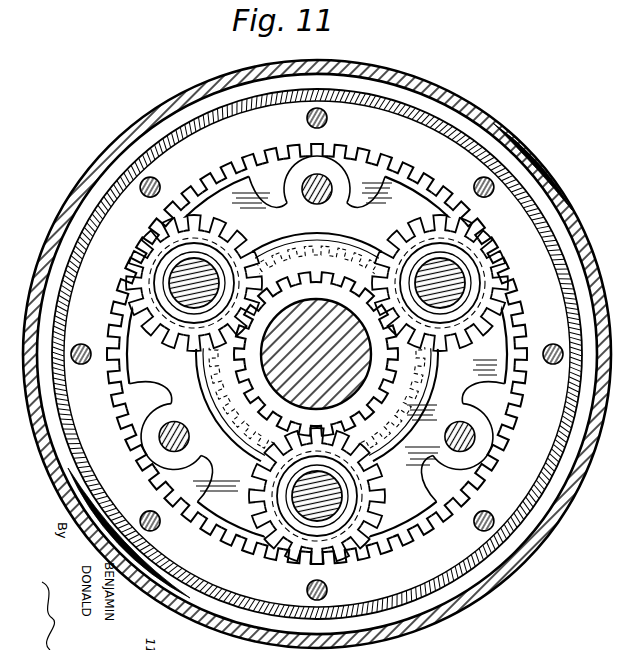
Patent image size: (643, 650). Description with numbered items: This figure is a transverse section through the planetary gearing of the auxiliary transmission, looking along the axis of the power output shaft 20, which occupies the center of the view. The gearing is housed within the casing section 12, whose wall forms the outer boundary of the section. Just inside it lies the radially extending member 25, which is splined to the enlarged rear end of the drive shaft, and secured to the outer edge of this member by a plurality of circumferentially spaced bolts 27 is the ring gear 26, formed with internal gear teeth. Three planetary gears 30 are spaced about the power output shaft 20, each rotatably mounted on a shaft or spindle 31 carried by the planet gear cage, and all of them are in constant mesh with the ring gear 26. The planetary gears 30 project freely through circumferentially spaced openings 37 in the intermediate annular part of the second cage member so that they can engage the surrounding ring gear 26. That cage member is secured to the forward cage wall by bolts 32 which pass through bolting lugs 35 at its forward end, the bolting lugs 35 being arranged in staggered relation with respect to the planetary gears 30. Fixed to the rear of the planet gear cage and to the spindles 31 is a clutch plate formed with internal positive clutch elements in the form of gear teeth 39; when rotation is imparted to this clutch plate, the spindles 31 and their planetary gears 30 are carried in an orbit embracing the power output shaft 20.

The casing section 12 is at (428, 94).
The radially extending member 25 is at (463, 137).
The ring gear 26 is at (515, 217).
The bolts 27 is at (163, 175).
The bolting lugs 35 is at (340, 175).
The bolts 32 is at (317, 196).
The openings 37 is at (244, 240).
The shaft or spindle 31 is at (178, 274).
The planetary gears 30 is at (497, 265).
The power output shaft 20 is at (360, 375).
The gear teeth 39 is at (240, 450).